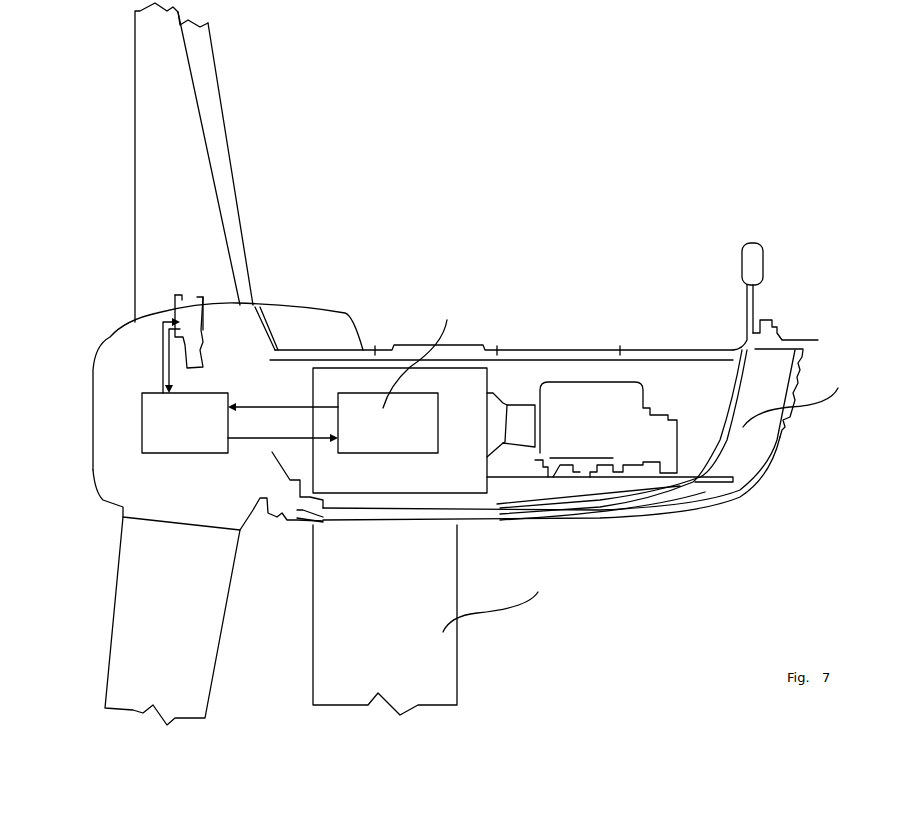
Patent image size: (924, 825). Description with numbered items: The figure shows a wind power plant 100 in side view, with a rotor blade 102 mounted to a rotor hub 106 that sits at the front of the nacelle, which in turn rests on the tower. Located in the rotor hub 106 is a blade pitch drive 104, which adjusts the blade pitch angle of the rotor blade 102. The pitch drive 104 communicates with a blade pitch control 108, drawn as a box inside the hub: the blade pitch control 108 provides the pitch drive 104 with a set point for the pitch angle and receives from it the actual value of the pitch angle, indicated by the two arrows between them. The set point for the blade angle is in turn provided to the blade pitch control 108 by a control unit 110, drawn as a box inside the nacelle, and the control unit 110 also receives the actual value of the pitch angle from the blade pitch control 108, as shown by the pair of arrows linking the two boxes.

The wind power plant 100 is at (492, 264).
The rotor blade 102 is at (195, 203).
The blade pitch drive 104 is at (197, 293).
The rotor hub 106 is at (122, 398).
The blade pitch control 108 is at (152, 448).
The control unit 110 is at (400, 430).